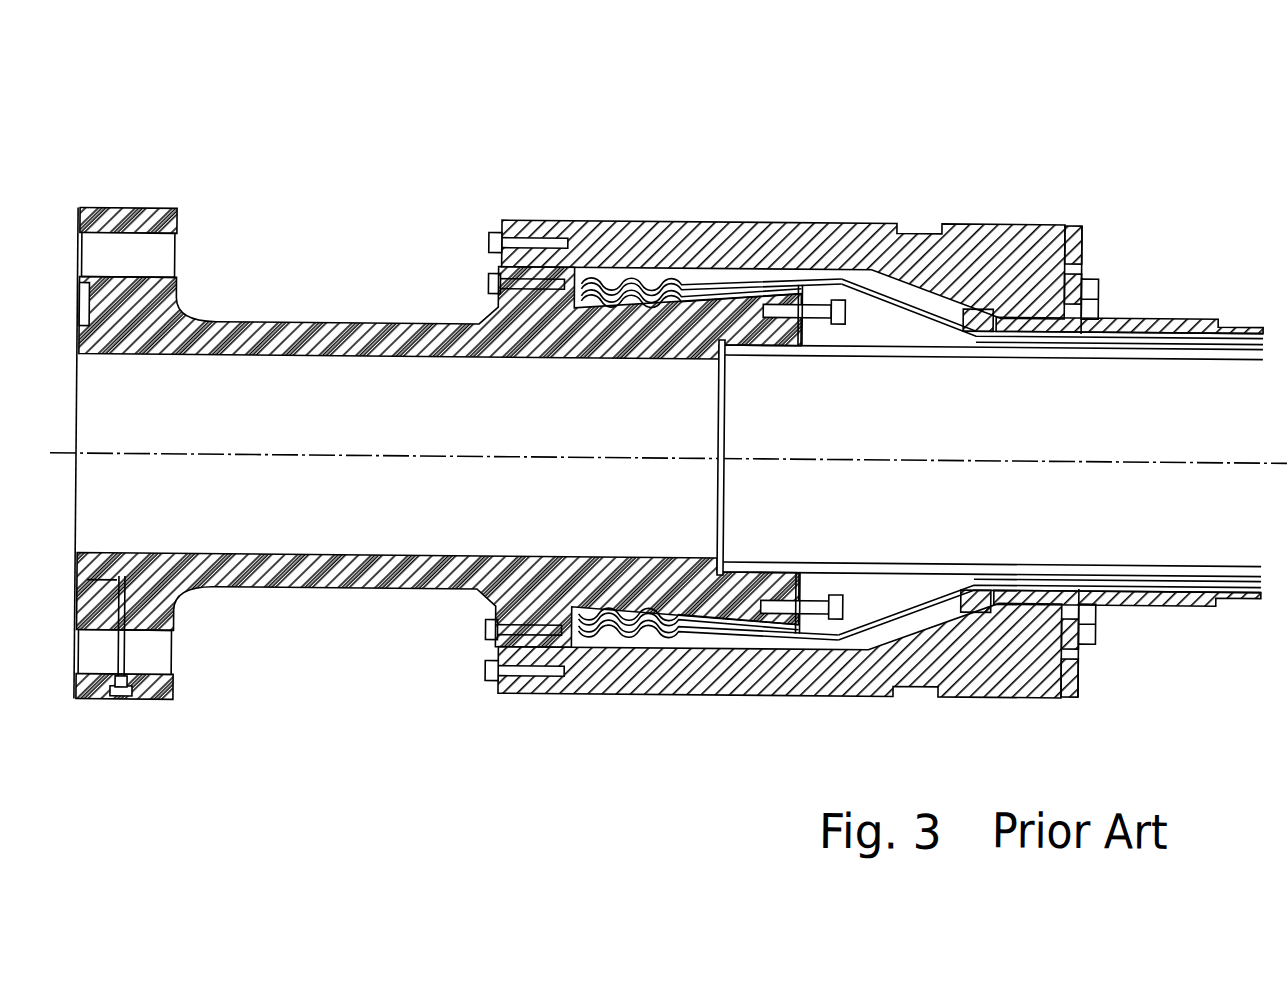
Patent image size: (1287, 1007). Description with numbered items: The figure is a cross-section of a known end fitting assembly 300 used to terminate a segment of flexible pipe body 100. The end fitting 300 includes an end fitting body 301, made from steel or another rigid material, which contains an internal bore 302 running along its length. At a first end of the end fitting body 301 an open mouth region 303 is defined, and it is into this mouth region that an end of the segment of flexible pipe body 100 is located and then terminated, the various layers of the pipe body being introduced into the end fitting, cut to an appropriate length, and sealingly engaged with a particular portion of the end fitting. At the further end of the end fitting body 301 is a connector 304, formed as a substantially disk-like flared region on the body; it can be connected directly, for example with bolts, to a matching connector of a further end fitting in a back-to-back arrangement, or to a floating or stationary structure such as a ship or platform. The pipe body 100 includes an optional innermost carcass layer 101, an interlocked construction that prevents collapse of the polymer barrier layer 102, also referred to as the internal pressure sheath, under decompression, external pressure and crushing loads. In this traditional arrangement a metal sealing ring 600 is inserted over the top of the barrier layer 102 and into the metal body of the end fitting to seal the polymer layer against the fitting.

The end fitting assembly 300 is at (478, 99).
The connector 304 is at (180, 225).
The end fitting body 301 is at (278, 329).
The internal bore 302 is at (316, 447).
The open mouth region 303 is at (664, 409).
The metal sealing ring 600 is at (784, 346).
The carcass layer 101 is at (897, 363).
The barrier layer 102 is at (748, 557).
The flexible pipe body 100 is at (1265, 601).